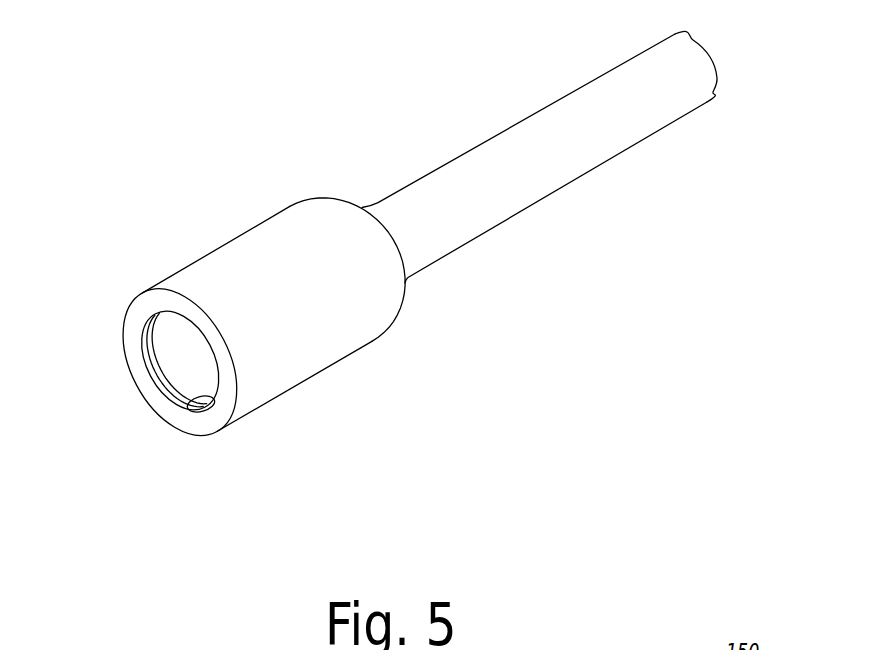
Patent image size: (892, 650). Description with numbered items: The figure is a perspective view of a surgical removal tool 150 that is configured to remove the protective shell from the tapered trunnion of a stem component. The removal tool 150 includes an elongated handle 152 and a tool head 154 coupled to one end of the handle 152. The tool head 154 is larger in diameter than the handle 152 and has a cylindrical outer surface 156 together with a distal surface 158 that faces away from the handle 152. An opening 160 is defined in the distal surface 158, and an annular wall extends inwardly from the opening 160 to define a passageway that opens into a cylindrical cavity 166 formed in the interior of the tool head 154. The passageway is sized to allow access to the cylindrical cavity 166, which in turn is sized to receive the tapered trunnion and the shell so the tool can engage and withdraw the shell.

The surgical removal tool 150 is at (391, 243).
The handle 152 is at (568, 165).
The tool head 154 is at (355, 322).
The cylindrical outer surface 156 is at (323, 361).
The distal surface 158 is at (192, 420).
The opening 160 is at (216, 401).
The cylindrical cavity 166 is at (166, 366).